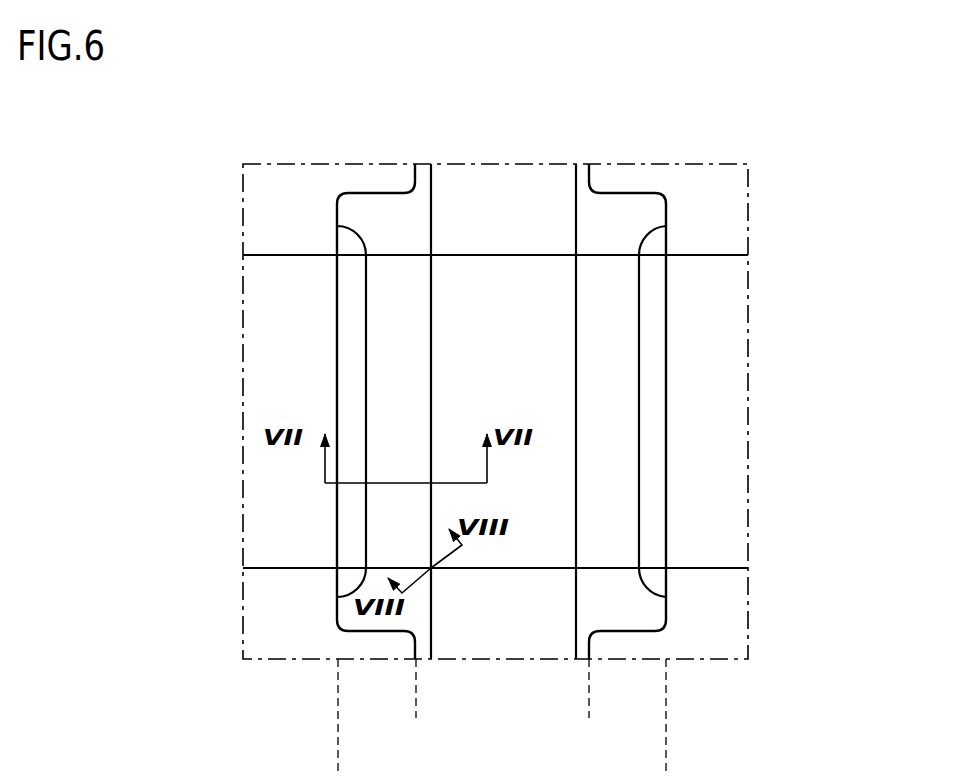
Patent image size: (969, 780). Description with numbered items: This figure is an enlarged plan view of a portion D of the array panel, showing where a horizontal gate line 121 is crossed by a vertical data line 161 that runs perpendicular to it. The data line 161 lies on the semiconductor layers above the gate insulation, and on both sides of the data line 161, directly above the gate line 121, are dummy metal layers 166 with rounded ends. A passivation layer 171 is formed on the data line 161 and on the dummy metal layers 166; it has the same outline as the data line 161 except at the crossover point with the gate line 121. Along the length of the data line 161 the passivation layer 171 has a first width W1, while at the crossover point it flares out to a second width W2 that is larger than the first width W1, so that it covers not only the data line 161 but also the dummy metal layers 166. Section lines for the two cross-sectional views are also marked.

The gate line 121 is at (722, 569).
The data line 161 is at (431, 218).
The dummy metal layers 166 is at (366, 342).
The passivation layer 171 is at (629, 193).
The portion D is at (750, 211).
The first width W1 is at (589, 707).
The second width W2 is at (666, 757).